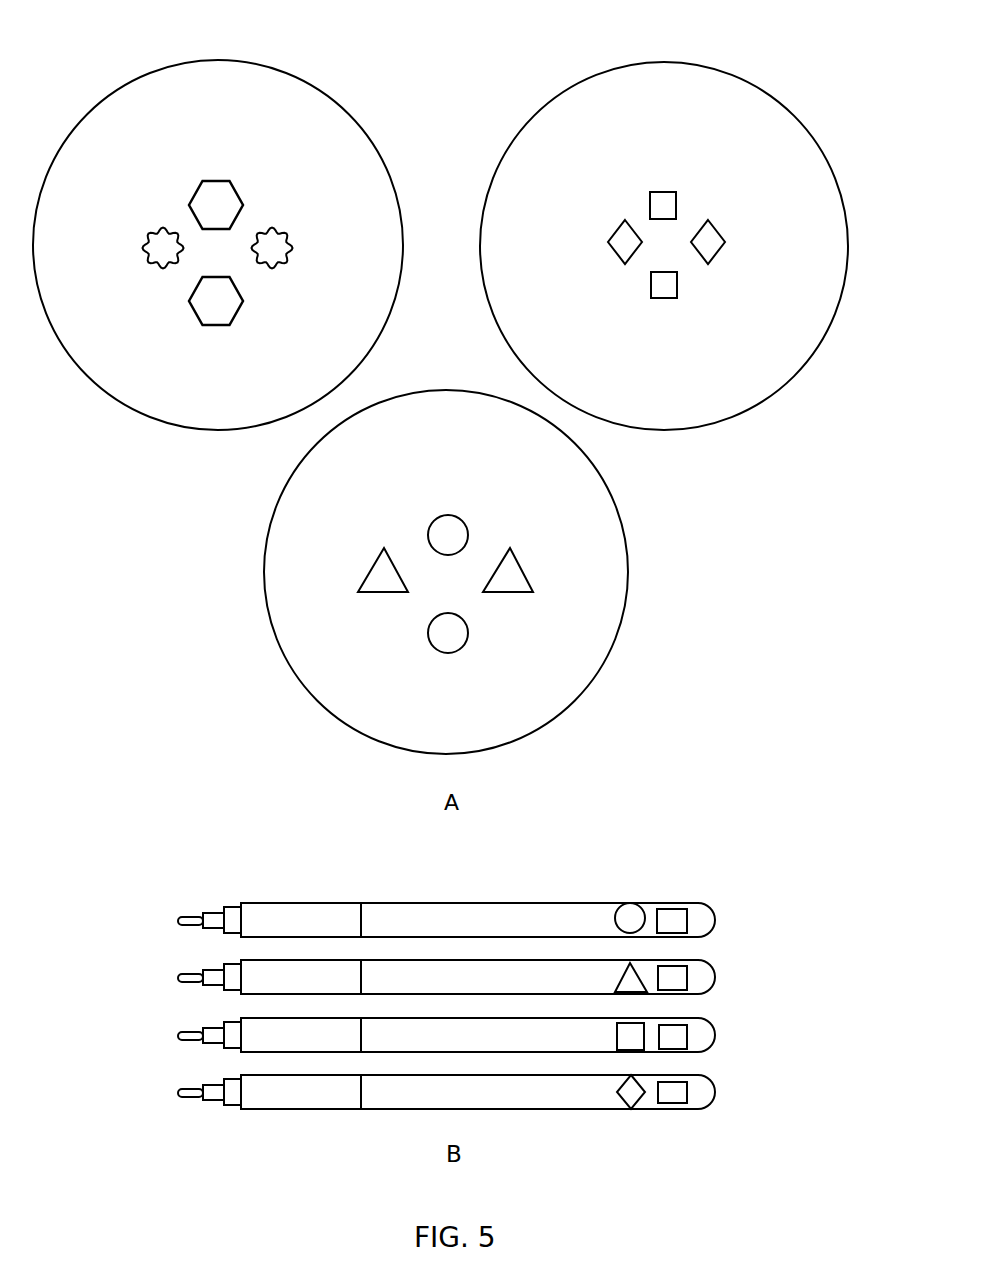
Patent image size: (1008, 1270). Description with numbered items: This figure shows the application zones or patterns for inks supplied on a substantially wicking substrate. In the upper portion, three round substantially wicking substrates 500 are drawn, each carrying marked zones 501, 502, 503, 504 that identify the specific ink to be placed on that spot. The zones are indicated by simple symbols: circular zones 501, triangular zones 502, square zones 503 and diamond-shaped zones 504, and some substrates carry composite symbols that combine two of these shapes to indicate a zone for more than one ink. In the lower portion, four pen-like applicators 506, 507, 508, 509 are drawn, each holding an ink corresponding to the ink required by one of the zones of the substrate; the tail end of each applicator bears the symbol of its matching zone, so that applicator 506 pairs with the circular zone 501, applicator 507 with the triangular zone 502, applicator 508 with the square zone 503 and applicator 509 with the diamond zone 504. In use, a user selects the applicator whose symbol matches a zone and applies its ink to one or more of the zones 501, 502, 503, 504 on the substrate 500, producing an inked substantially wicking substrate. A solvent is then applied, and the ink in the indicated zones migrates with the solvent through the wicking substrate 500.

The substantially wicking substrate 500 is at (263, 578).
The zone 501 is at (468, 633).
The zone 502 is at (483, 592).
The zone 503 is at (676, 204).
The zone 504 is at (708, 220).
The applicator 506 is at (425, 920).
The applicator 507 is at (425, 977).
The applicator 508 is at (425, 1035).
The applicator 509 is at (425, 1092).